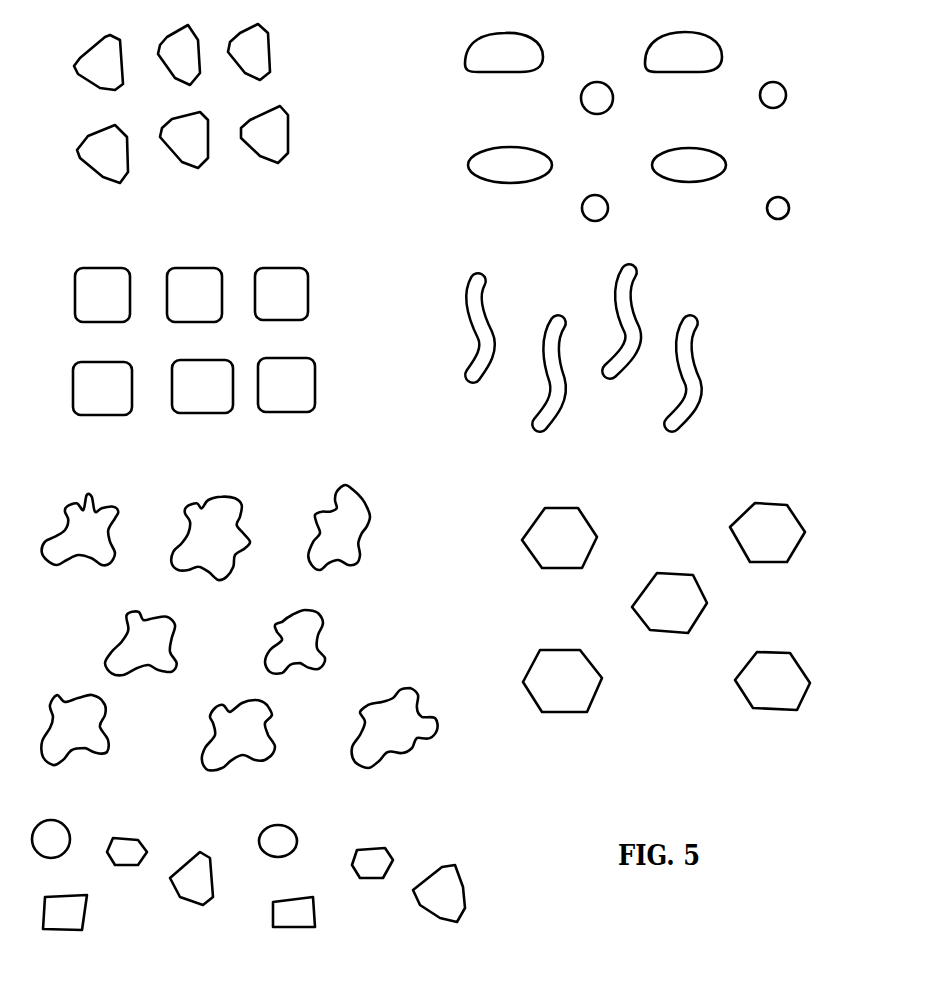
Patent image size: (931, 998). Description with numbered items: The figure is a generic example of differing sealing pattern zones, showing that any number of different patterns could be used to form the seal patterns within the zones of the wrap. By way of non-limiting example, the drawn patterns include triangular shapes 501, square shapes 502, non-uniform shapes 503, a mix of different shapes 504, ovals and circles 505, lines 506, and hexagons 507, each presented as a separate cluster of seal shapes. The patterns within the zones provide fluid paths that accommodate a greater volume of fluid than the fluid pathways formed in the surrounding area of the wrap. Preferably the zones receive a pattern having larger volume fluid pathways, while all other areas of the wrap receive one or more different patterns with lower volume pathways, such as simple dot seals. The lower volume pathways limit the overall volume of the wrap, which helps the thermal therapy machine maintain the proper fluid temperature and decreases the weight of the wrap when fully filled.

The triangular shapes 501 is at (325, 89).
The square shapes 502 is at (338, 332).
The non-uniform shapes 503 is at (395, 585).
The mix of different shapes 504 is at (493, 868).
The ovals and circles 505 is at (816, 122).
The lines 506 is at (750, 378).
The hexagons 507 is at (811, 602).